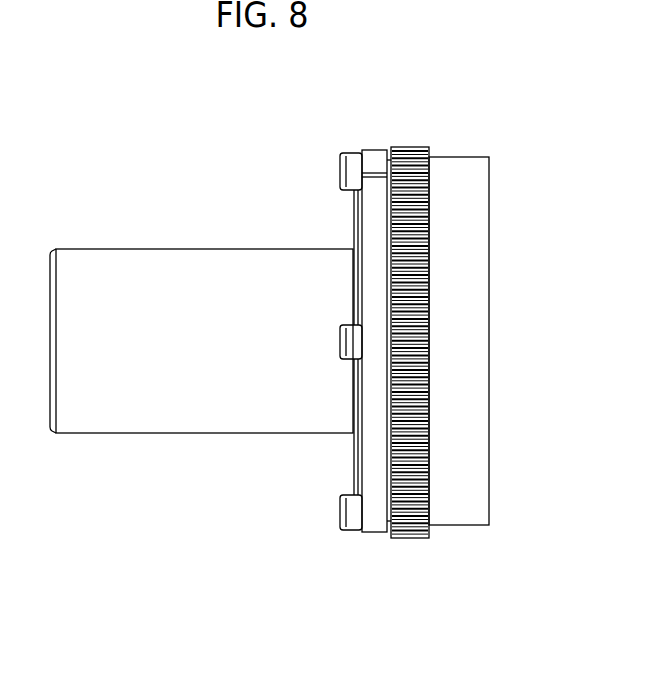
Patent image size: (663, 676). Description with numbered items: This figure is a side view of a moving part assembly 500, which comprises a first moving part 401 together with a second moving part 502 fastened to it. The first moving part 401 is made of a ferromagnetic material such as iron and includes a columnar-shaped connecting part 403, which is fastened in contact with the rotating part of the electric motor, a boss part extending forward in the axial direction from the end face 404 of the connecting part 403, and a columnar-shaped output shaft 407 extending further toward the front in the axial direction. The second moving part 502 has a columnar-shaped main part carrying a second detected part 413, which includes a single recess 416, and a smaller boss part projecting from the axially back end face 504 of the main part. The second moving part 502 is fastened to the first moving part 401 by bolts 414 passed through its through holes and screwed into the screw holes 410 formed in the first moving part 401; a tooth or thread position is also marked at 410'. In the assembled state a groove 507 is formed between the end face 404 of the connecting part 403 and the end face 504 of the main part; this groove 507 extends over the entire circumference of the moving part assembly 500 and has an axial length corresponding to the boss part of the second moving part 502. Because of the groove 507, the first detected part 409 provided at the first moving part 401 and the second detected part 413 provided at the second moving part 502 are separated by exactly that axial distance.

The output shaft 407 is at (147, 249).
The moving part assembly 500 is at (442, 83).
The second moving part 502 is at (375, 150).
The first moving part 401 is at (453, 157).
The bolts 414 is at (340, 170).
The recess 416 is at (378, 178).
The end face 404 is at (391, 222).
The screw holes 410 is at (486, 305).
The tooth 410' is at (494, 356).
The end face 504 is at (390, 408).
The second detected part 413 is at (368, 533).
The groove 507 is at (388, 527).
The first detected part 409 is at (409, 539).
The connecting part 403 is at (462, 528).